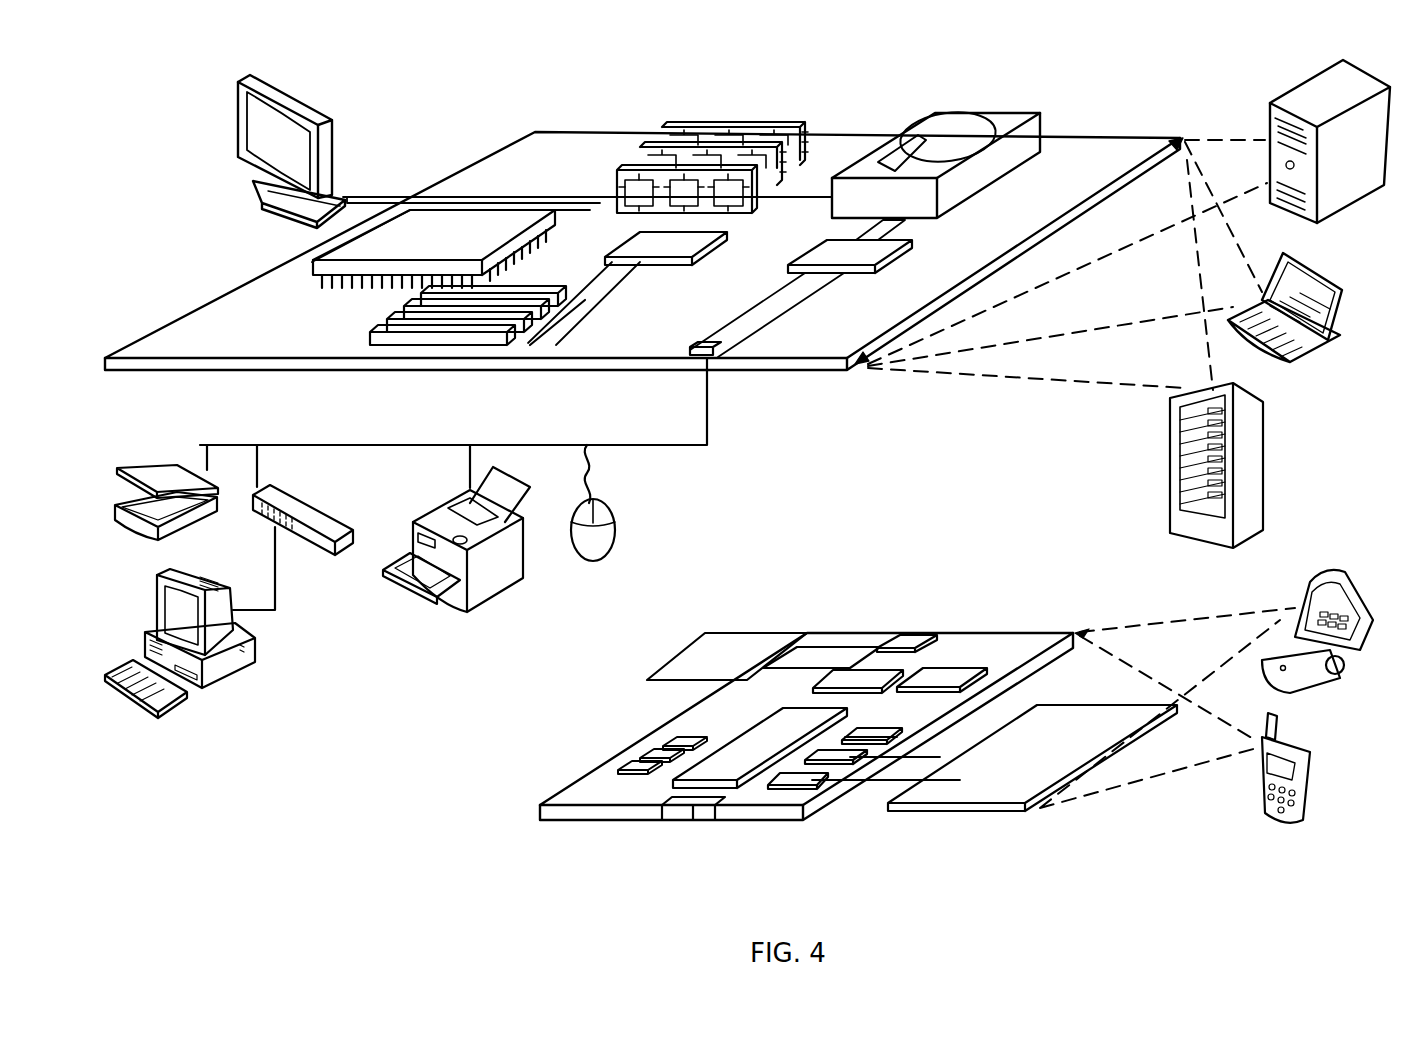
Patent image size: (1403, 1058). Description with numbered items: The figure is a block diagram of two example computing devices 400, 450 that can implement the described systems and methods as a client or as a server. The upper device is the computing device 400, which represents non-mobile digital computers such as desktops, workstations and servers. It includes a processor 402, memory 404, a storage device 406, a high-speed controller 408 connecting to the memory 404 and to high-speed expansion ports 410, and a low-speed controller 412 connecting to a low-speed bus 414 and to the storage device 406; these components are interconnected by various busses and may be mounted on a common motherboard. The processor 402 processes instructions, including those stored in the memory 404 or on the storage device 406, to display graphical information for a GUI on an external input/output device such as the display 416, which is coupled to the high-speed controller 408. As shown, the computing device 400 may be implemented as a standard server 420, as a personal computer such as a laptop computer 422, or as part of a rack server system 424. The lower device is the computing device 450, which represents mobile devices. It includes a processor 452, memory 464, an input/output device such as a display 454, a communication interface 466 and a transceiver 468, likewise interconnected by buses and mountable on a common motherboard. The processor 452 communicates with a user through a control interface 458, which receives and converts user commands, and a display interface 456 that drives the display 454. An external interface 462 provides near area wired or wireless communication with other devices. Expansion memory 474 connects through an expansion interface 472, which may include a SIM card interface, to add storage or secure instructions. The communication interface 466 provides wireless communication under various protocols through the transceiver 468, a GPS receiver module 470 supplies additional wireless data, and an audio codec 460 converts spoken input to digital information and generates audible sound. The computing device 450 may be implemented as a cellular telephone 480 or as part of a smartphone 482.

The computing device 400 is at (454, 106).
The processor 402 is at (300, 263).
The memory 404 is at (672, 130).
The storage device 406 is at (937, 116).
The high-speed controller 408 is at (641, 247).
The high-speed expansion ports 410 is at (397, 323).
The low-speed controller 412 is at (820, 245).
The low-speed bus 414 is at (716, 356).
The display 416 is at (244, 81).
The standard server 420 is at (1271, 121).
The laptop computer 422 is at (1338, 278).
The rack server system 424 is at (1170, 491).
The computing device 450 is at (515, 816).
The processor 452 is at (724, 776).
The display 454 is at (983, 795).
The display interface 456 is at (791, 779).
The control interface 458 is at (836, 756).
The audio codec 460 is at (861, 742).
The external interface 462 is at (682, 810).
The memory 464 is at (637, 773).
The communication interface 466 is at (863, 688).
The transceiver 468 is at (932, 684).
The GPS receiver module 470 is at (917, 634).
The expansion interface 472 is at (781, 654).
The expansion memory 474 is at (703, 660).
The cellular telephone 480 is at (1312, 587).
The smartphone 482 is at (1258, 798).